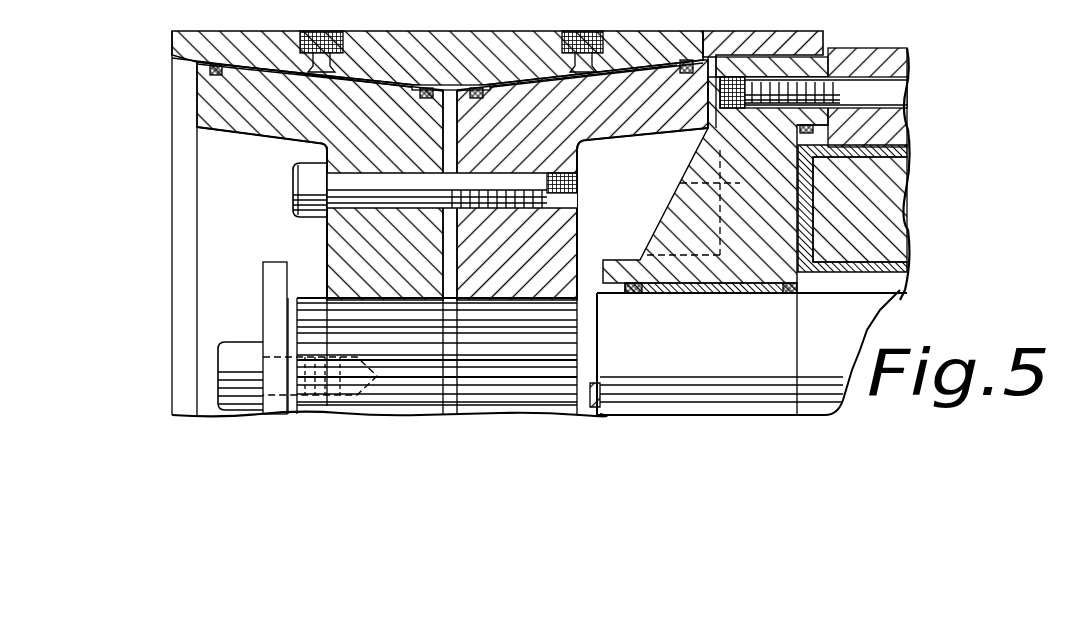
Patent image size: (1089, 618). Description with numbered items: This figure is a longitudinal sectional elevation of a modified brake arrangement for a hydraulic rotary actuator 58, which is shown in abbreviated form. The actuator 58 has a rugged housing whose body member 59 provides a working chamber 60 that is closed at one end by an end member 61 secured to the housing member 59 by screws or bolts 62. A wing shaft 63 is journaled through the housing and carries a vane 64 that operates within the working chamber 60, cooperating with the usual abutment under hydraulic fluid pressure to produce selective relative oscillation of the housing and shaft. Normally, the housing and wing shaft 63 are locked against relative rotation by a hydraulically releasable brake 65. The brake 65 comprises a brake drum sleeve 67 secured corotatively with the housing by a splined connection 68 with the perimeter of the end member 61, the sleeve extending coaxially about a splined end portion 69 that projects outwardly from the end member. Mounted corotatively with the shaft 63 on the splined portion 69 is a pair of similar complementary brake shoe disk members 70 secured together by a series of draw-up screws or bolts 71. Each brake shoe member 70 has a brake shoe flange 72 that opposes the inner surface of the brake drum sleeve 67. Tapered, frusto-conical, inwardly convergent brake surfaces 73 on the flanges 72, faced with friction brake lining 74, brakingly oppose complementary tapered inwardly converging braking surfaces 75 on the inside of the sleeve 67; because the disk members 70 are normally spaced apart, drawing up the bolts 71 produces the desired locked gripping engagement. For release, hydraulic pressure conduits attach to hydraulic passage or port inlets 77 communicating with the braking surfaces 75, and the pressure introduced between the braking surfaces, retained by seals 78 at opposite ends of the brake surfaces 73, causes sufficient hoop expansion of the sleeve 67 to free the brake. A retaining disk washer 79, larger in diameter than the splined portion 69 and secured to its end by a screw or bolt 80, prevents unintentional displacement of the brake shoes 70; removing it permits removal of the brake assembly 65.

The hydraulic rotary actuator 58 is at (938, 70).
The body member 59 is at (892, 125).
The working chamber 60 is at (907, 153).
The end member 61 is at (735, 183).
The screws or bolts 62 is at (890, 88).
The wing shaft 63 is at (870, 310).
The vane 64 is at (890, 224).
The hydraulically releasable brake 65 is at (150, 54).
The brake drum sleeve 67 is at (678, 52).
The splined connection 68 is at (777, 58).
The splined end portion 69 is at (316, 300).
The brake shoe disk members 70 is at (327, 227).
The draw-up screws or bolts 71 is at (305, 185).
The brake shoe flange 72 is at (268, 128).
The brake surfaces 73 is at (388, 84).
The friction brake lining 74 is at (352, 82).
The braking surfaces 75 is at (195, 58).
The hydraulic passage or port inlets 77 is at (325, 40).
The seals 78 is at (212, 72).
The retaining disk washer 79 is at (272, 290).
The screw or bolt 80 is at (235, 360).